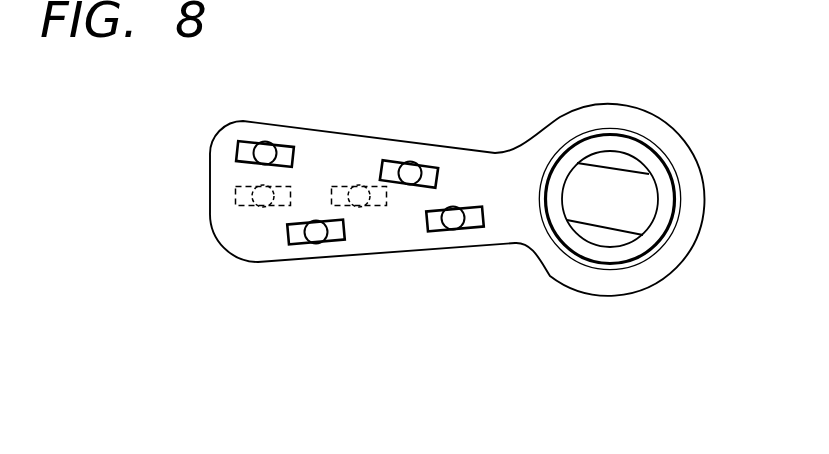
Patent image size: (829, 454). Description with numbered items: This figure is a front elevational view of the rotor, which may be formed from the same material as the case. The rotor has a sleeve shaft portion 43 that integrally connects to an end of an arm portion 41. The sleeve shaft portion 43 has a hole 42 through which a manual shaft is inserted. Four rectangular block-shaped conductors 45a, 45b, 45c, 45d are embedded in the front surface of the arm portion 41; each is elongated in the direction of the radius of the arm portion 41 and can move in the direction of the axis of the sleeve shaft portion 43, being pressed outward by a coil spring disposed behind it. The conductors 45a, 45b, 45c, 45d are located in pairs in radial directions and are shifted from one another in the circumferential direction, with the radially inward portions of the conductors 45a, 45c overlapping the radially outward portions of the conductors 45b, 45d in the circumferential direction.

The arm portion 41 is at (378, 246).
The hole 42 is at (650, 217).
The sleeve shaft portion 43 is at (706, 203).
The conductor 45a is at (287, 151).
The conductor 45b is at (297, 248).
The conductor 45c is at (433, 171).
The conductor 45d is at (472, 233).